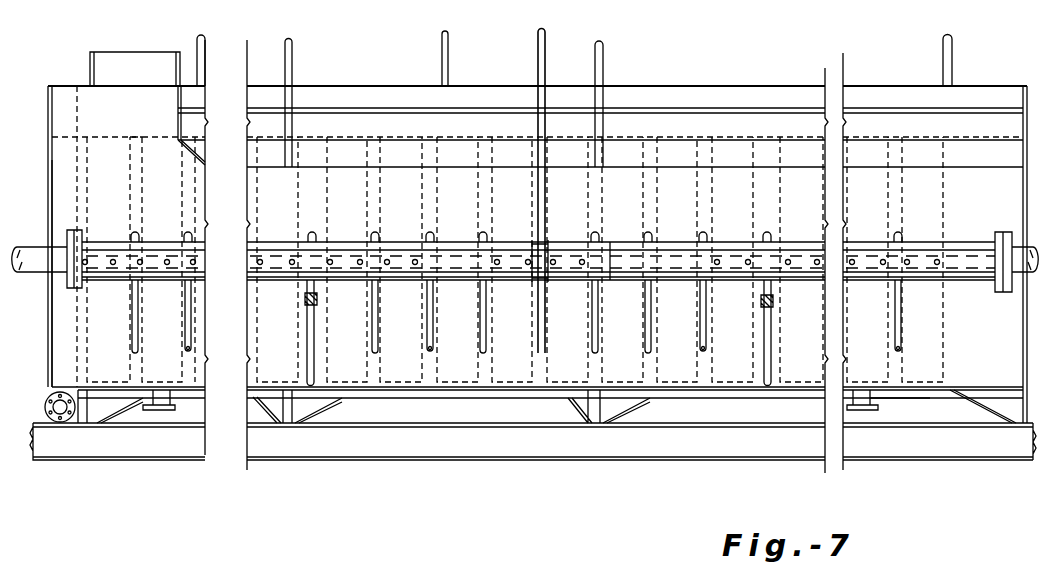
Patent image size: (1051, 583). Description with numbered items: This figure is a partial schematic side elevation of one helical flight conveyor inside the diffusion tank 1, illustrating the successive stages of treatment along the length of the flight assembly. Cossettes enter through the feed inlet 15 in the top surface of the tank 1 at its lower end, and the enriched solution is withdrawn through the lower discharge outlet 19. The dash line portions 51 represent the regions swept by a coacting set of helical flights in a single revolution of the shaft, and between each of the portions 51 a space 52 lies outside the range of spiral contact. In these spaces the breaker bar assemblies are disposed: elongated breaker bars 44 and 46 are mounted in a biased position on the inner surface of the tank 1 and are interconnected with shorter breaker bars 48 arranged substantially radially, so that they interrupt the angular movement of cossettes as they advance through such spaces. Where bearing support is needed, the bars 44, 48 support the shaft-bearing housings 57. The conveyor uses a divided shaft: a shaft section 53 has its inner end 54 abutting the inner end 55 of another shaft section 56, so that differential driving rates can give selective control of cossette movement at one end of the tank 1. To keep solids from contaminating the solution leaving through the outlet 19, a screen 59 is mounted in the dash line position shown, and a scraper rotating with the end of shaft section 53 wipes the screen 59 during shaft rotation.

The tank 1 is at (44, 160).
The feed inlet 15 is at (143, 60).
The lower discharge outlet 19 is at (46, 396).
The elongated breaker bar 44 is at (320, 300).
The elongated breaker bar 46 is at (138, 318).
The shorter breaker bar 48 is at (312, 333).
The dash line portion 51 is at (107, 142).
The space 52 is at (141, 142).
The shaft section 53 is at (440, 252).
The inner end of shaft section 54 is at (529, 260).
The inner end of shaft section 55 is at (548, 258).
The shaft section 56 is at (618, 252).
The shaft-bearing housing 57 is at (314, 252).
The screen 59 is at (77, 183).